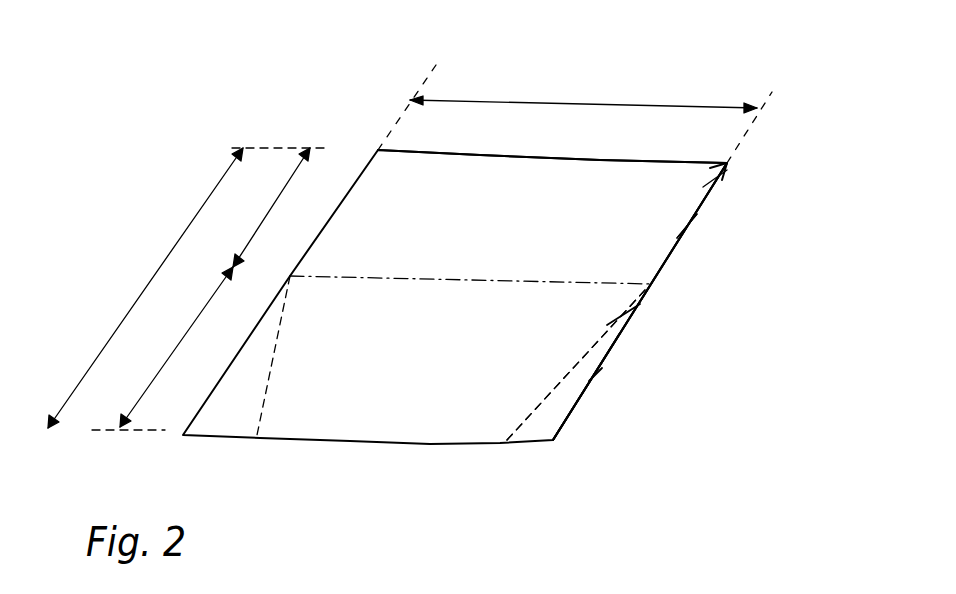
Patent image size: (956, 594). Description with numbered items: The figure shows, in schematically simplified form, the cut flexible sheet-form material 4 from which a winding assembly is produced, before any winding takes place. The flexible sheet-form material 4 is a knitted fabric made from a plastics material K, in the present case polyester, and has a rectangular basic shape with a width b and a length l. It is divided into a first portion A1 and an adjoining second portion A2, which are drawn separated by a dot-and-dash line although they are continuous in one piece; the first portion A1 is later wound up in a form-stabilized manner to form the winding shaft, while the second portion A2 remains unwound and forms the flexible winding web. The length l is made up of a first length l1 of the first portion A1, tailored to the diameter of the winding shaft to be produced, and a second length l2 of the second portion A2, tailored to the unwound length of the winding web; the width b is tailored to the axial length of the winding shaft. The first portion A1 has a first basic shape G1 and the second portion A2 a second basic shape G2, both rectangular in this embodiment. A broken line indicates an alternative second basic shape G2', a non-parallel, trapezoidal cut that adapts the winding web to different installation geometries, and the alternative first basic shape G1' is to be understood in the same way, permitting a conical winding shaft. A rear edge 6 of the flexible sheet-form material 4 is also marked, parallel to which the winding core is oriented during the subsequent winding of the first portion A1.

The flexible sheet-form material 4 is at (363, 97).
The rear edge 6 is at (583, 150).
The plastics material K is at (723, 173).
The first basic shape G1 is at (691, 301).
The alternative first basic shape G1' is at (691, 301).
The second basic shape G2 is at (626, 386).
The alternative second basic shape G2' is at (623, 365).
The first portion A1 is at (498, 240).
The second portion A2 is at (405, 382).
The width b is at (583, 90).
The length l is at (189, 289).
The first length l1 is at (265, 207).
The second length l2 is at (176, 347).